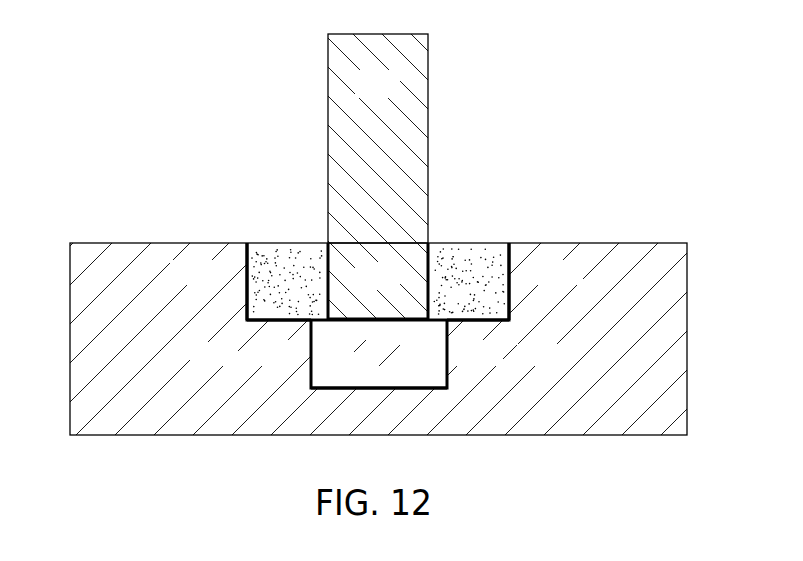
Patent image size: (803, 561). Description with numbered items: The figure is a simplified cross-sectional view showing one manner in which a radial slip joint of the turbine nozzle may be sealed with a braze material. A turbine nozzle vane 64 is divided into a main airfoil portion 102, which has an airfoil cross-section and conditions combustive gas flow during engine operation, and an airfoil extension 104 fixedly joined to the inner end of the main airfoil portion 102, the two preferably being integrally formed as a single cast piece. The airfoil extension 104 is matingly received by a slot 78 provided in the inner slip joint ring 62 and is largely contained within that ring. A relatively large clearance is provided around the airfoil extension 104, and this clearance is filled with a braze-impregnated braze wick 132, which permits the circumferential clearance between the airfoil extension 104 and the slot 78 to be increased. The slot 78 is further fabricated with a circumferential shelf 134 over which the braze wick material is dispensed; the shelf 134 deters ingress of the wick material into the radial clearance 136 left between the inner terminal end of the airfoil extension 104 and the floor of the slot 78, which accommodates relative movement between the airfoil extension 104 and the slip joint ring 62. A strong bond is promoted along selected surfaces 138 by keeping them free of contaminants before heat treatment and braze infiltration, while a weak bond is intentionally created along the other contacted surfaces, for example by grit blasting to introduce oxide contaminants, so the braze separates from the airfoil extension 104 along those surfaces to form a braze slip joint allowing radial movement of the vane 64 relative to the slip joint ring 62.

The slip joint ring 62 is at (102, 252).
The turbine nozzle vane 64 is at (436, 63).
The main airfoil portion 102 is at (397, 96).
The airfoil extension 104 is at (397, 288).
The braze wick 132 is at (285, 252).
The circumferential shelf 134 is at (297, 364).
The radial clearance 136 is at (397, 364).
The selected surfaces 138 is at (247, 285).
The slot 78 is at (423, 395).